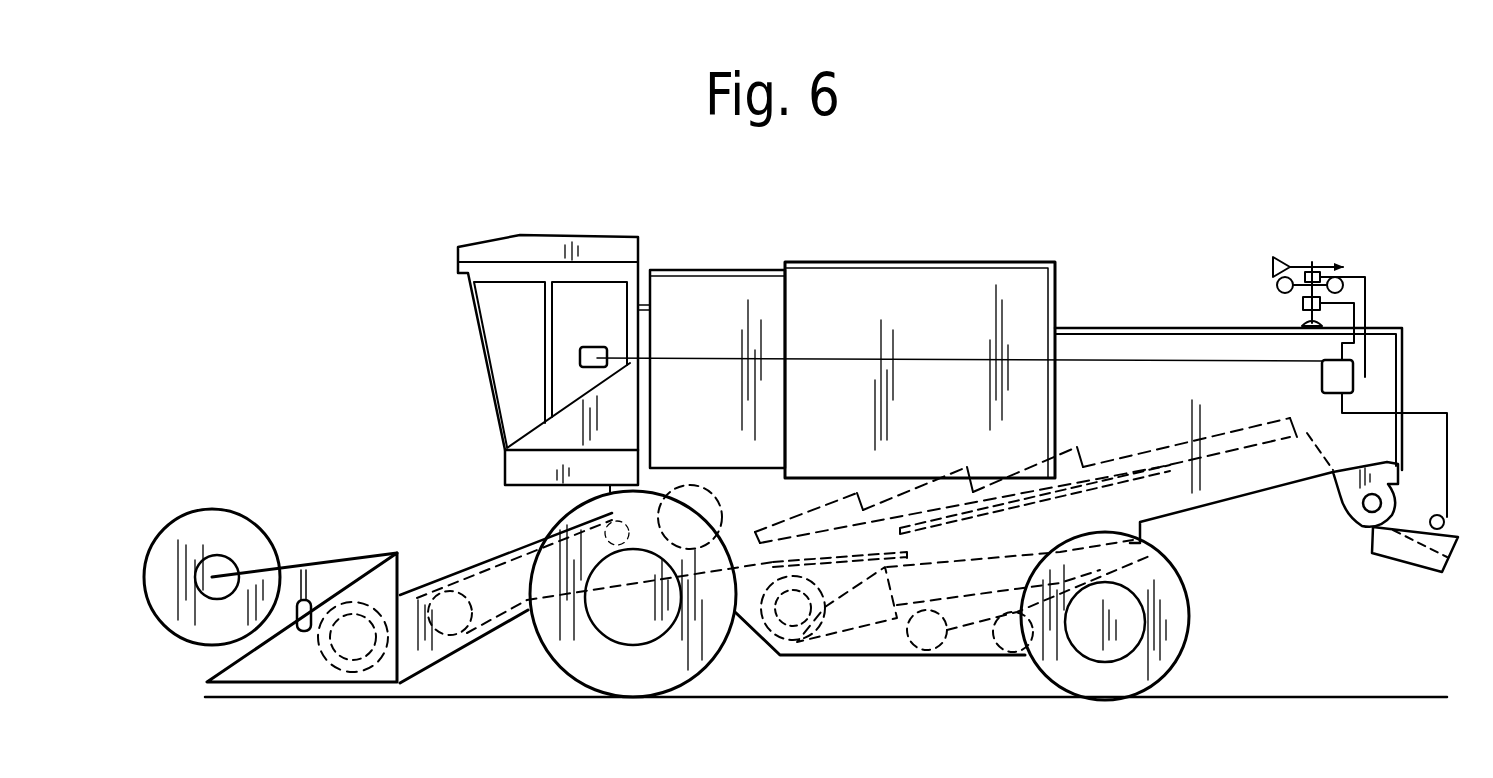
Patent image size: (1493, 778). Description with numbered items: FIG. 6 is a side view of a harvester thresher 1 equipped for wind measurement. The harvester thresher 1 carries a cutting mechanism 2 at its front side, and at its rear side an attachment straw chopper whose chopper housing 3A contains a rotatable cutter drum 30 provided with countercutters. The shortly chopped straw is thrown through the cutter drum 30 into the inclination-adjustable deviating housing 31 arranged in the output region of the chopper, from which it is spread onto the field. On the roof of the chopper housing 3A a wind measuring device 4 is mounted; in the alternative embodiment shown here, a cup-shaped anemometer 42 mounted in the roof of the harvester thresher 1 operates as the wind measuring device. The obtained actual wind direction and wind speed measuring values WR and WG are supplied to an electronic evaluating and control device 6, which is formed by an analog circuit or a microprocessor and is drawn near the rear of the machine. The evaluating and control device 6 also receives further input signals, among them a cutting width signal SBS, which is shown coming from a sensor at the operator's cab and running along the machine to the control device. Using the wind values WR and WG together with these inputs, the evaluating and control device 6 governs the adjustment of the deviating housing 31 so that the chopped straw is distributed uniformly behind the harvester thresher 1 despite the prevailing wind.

The harvester thresher 1 is at (952, 338).
The cutting mechanism 2 is at (312, 520).
The chopper housing 3A is at (1150, 350).
The wind measuring device 4 is at (1283, 225).
The cup-shaped anemometer 42 is at (1302, 237).
The wind speed measuring value WG is at (1365, 293).
The wind direction measuring value WR is at (1368, 307).
The cutting width signal SBS is at (951, 341).
The evaluating and control device 6 is at (1353, 377).
The cutter drum 30 is at (1360, 518).
The deviating housing 31 is at (1415, 560).